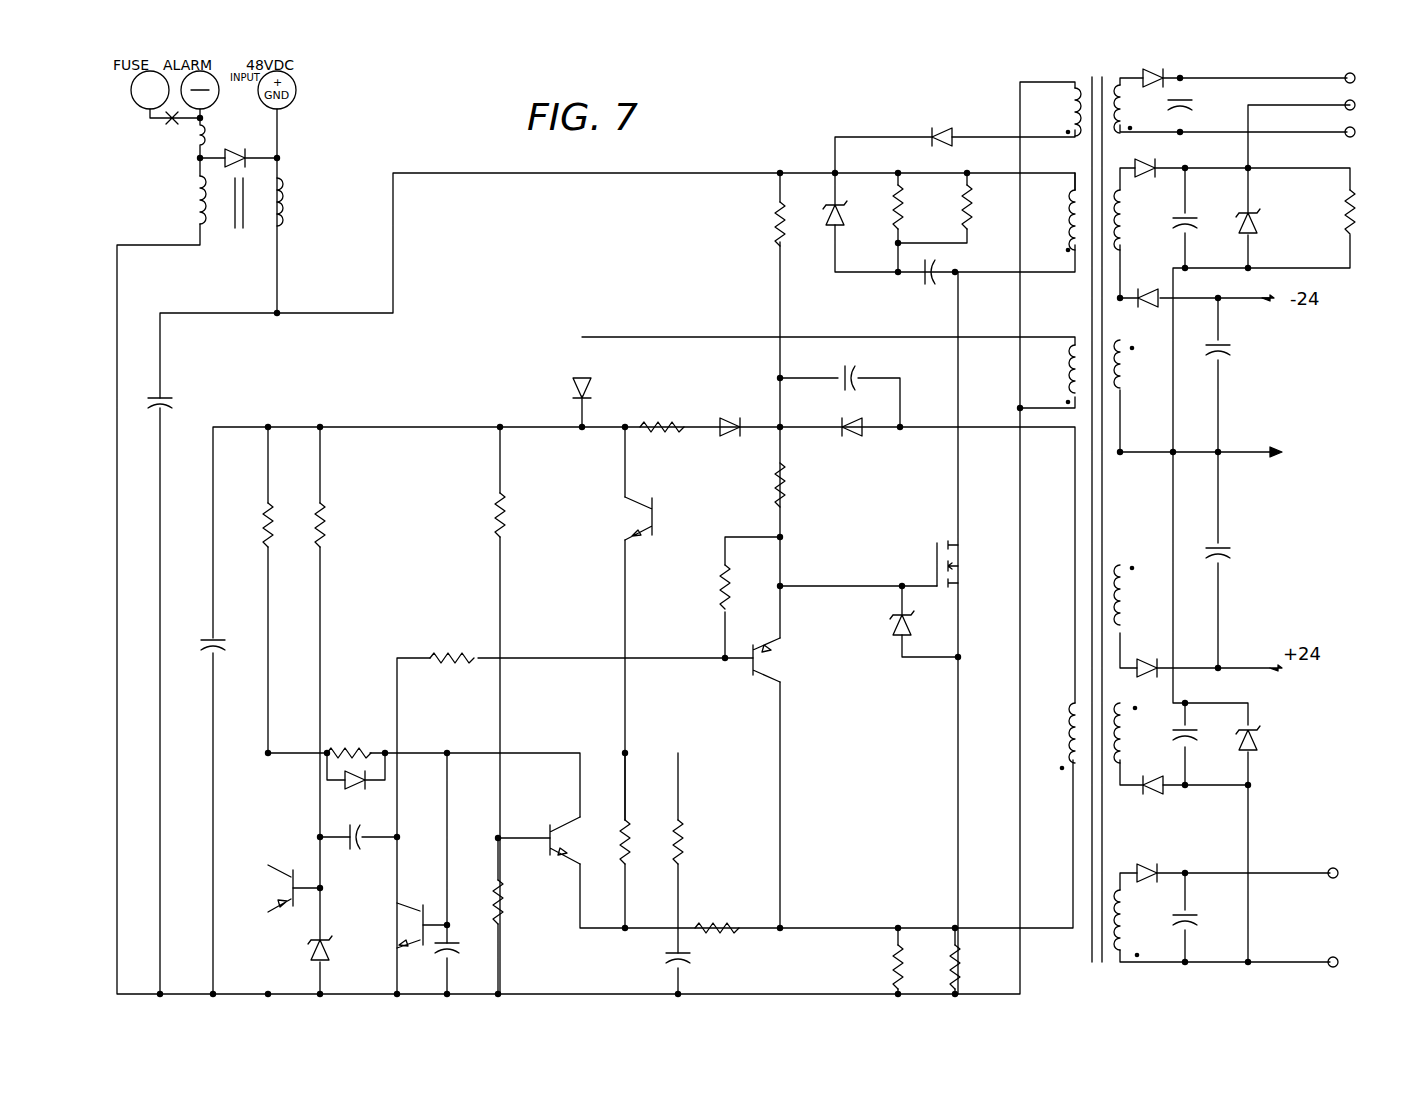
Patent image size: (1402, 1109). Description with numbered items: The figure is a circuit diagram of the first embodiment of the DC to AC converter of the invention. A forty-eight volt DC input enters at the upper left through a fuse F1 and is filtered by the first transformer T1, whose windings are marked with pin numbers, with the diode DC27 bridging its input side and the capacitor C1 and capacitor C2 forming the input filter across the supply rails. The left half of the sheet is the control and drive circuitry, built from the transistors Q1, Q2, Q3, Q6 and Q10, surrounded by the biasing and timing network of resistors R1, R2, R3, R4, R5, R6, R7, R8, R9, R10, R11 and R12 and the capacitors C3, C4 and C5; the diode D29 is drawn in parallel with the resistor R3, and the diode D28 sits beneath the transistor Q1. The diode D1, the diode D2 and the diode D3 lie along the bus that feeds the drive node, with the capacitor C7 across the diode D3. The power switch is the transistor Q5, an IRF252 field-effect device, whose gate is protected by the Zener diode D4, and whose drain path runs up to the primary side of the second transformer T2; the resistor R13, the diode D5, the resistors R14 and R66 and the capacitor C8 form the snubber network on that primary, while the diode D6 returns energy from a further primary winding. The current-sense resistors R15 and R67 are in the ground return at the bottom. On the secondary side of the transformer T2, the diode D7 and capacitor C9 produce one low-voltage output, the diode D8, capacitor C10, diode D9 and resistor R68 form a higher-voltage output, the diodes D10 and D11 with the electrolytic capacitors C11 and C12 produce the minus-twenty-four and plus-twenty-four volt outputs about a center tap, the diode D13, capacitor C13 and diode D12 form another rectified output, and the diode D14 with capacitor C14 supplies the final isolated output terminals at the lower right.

The fuse 3A F1 is at (175, 134).
The diode DC27 is at (246, 151).
The transformer T1 is at (237, 213).
The capacitor C1 is at (172, 404).
The capacitor C2 is at (248, 636).
The resistor R1 is at (274, 512).
The resistor R2 is at (328, 512).
The resistor R3 is at (357, 746).
The resistor R4 is at (455, 655).
The resistor R5 is at (504, 517).
The resistor R6 is at (506, 912).
The resistor R7 is at (630, 836).
The resistor R8 is at (686, 836).
The resistor R9 is at (734, 920).
The resistor R10 is at (721, 595).
The resistor R11 is at (680, 410).
The resistor R12 is at (788, 505).
The resistor R13 is at (774, 228).
The resistor R14 is at (904, 204).
The resistor R15 is at (965, 970).
The resistor R66 is at (974, 204).
The resistor R67 is at (906, 970).
The resistor R68 is at (1371, 212).
The capacitor C3 is at (358, 830).
The capacitor C4 is at (472, 950).
The capacitor C5 is at (692, 958).
The capacitor C7 is at (855, 370).
The capacitor C8 is at (936, 280).
The capacitor C9 is at (1201, 106).
The capacitor C10 is at (1213, 212).
The capacitor C11 is at (1241, 349).
The capacitor C12 is at (1237, 553).
The capacitor C13 is at (1199, 736).
The capacitor C14 is at (1209, 920).
The diode D1 is at (595, 385).
The diode D2 is at (737, 420).
The diode D3 is at (852, 439).
The Zener diode D4 is at (888, 624).
The diode D5 is at (854, 219).
The diode D6 is at (943, 126).
The diode D7 is at (1167, 73).
The diode D8 is at (1144, 177).
The diode D9 is at (1260, 220).
The diode D10 is at (1148, 288).
The diode D11 is at (1150, 658).
The diode D12 is at (1260, 742).
The diode D13 is at (1155, 796).
The diode D14 is at (1160, 850).
The diode D28 is at (330, 952).
The diode D29 is at (355, 780).
The transistor Q1 is at (288, 886).
The transistor Q2 is at (417, 910).
The transistor Q3 is at (565, 826).
The transistor Q5 is at (953, 558).
The transistor Q6 is at (612, 518).
The transistor Q10 is at (766, 672).
The transformer T2 is at (1095, 507).